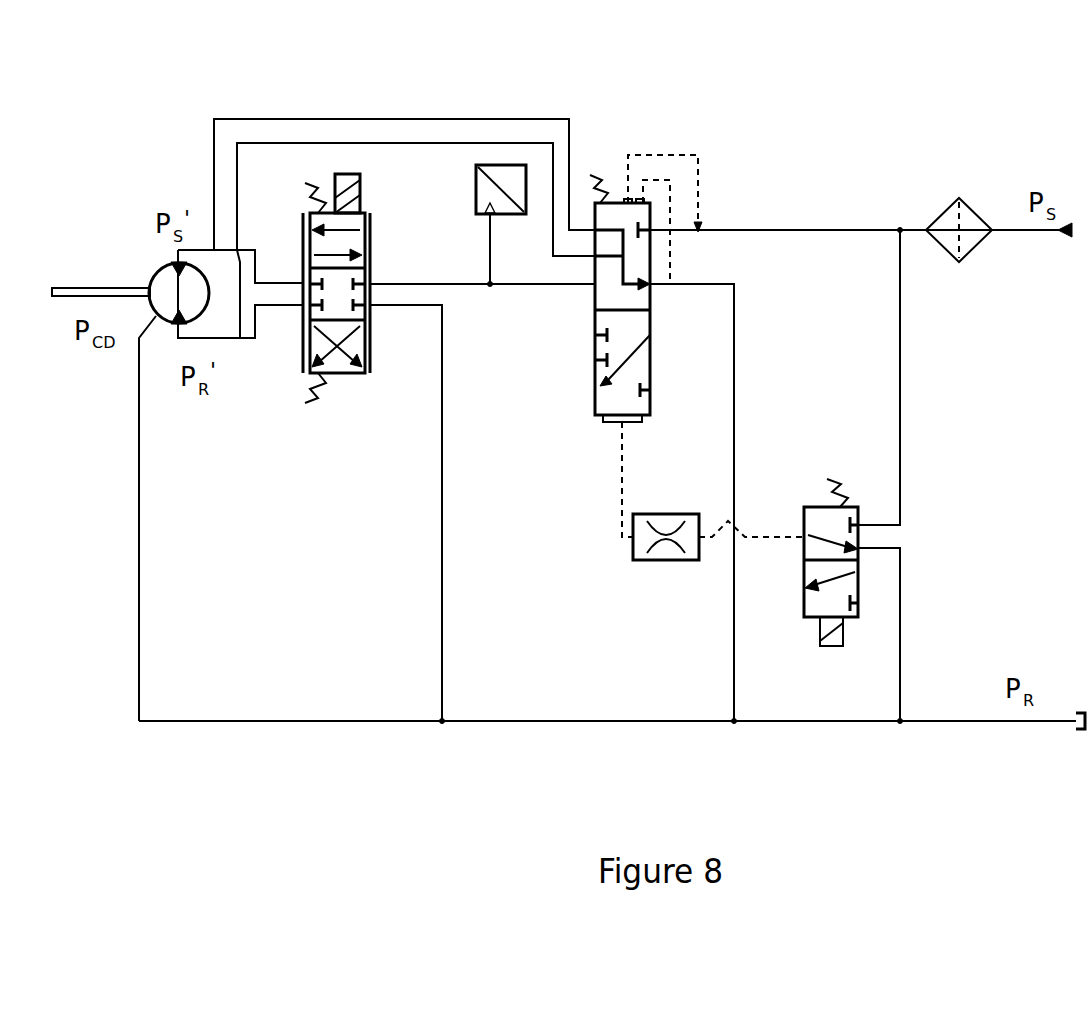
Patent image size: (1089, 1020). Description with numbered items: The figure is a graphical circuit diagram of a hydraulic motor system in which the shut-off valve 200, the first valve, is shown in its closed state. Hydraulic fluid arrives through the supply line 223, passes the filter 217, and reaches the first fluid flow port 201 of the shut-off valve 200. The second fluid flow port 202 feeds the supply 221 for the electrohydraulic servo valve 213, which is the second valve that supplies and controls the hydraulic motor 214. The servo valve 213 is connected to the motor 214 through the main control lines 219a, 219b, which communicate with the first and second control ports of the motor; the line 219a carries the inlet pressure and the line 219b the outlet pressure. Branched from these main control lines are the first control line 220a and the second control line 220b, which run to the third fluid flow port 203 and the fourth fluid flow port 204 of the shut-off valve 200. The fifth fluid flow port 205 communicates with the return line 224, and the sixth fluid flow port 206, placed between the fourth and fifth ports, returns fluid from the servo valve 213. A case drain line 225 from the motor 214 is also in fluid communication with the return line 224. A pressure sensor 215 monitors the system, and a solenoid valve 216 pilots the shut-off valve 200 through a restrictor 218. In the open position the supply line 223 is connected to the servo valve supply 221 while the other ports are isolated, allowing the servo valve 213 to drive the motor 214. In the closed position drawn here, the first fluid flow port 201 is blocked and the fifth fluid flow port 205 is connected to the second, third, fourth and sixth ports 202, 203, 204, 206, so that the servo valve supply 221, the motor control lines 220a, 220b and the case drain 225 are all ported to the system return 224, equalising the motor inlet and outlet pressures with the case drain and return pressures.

The shut-off valve 200 is at (552, 293).
The first fluid flow port 201 is at (651, 231).
The second fluid flow port 202 is at (596, 384).
The third fluid flow port 203 is at (594, 230).
The fourth fluid flow port 204 is at (596, 284).
The fifth fluid flow port 205 is at (597, 290).
The sixth fluid flow port 206 is at (651, 284).
The electrohydraulic servo valve 213 is at (333, 363).
The hydraulic motor 214 is at (165, 295).
The pressure sensor 215 is at (500, 176).
The solenoid valve 216 is at (820, 522).
The filter 217 is at (968, 240).
The restrictor 218 is at (660, 552).
The main control line 219a is at (203, 248).
The main control line 219b is at (227, 340).
The first control line 220a is at (336, 118).
The second control line 220b is at (336, 144).
The supply for the second valve 221 is at (500, 286).
The supply line 223 is at (1036, 232).
The return line 224 is at (1012, 723).
The case drain line 225 is at (140, 487).